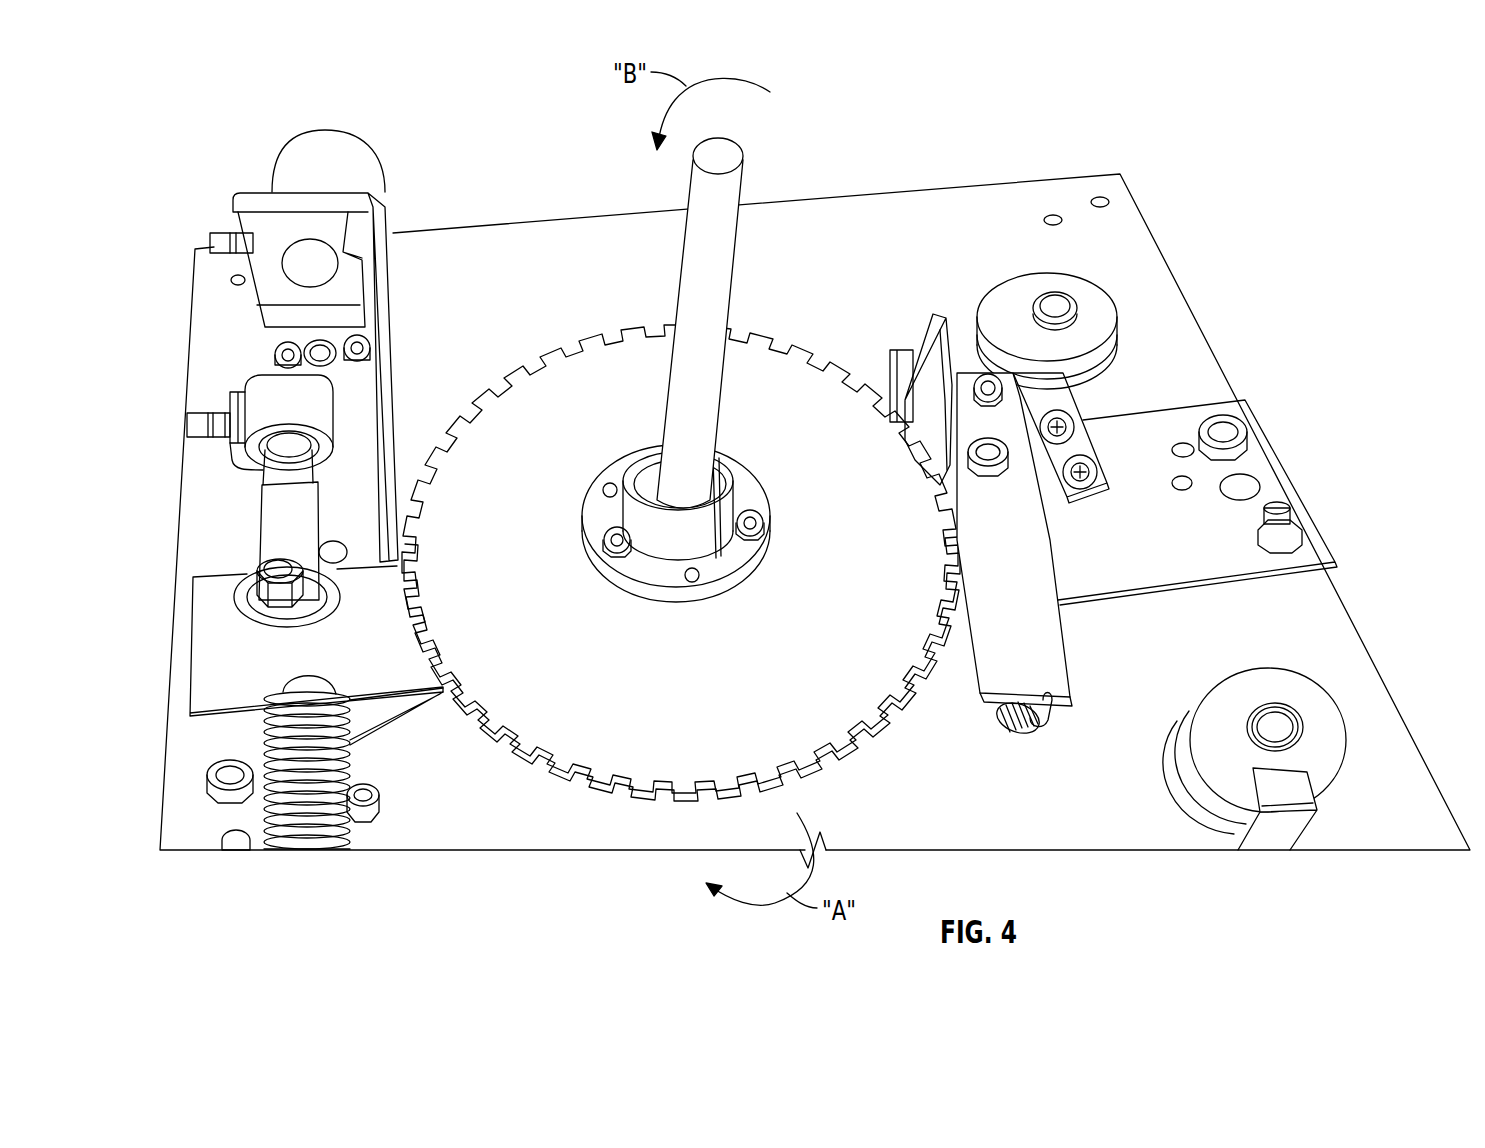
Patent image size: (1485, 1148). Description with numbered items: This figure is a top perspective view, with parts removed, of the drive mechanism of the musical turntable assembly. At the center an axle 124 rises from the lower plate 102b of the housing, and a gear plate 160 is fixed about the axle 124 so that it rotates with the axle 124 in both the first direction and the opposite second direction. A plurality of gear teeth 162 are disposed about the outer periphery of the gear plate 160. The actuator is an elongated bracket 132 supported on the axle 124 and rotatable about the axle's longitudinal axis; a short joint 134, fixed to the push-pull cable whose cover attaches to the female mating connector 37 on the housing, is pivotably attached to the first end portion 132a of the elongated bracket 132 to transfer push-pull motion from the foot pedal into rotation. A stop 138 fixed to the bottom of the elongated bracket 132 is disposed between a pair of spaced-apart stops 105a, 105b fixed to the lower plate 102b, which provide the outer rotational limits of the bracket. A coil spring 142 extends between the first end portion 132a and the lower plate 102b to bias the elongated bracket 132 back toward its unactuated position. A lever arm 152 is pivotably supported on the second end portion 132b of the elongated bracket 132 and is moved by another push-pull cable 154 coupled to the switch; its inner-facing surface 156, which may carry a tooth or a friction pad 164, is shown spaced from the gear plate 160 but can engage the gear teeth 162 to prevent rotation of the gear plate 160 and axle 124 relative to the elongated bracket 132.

The female mating connector 37 is at (380, 190).
The lower plate 102b is at (1137, 240).
The stop 105a is at (1075, 292).
The stop 105b is at (1325, 725).
The axle 124 is at (684, 196).
The elongated bracket 132 is at (236, 716).
The first end portion 132a is at (205, 650).
The second end portion 132b is at (1215, 570).
The short joint 134 is at (262, 528).
The stop 138 is at (1283, 457).
The coil spring 142 is at (346, 776).
The lever arm 152 is at (1060, 642).
The push-pull cable 154 is at (405, 703).
The inner-facing surface 156 is at (921, 336).
The gear plate 160 is at (546, 415).
The gear teeth 162 is at (793, 358).
The friction pad 164 is at (895, 367).